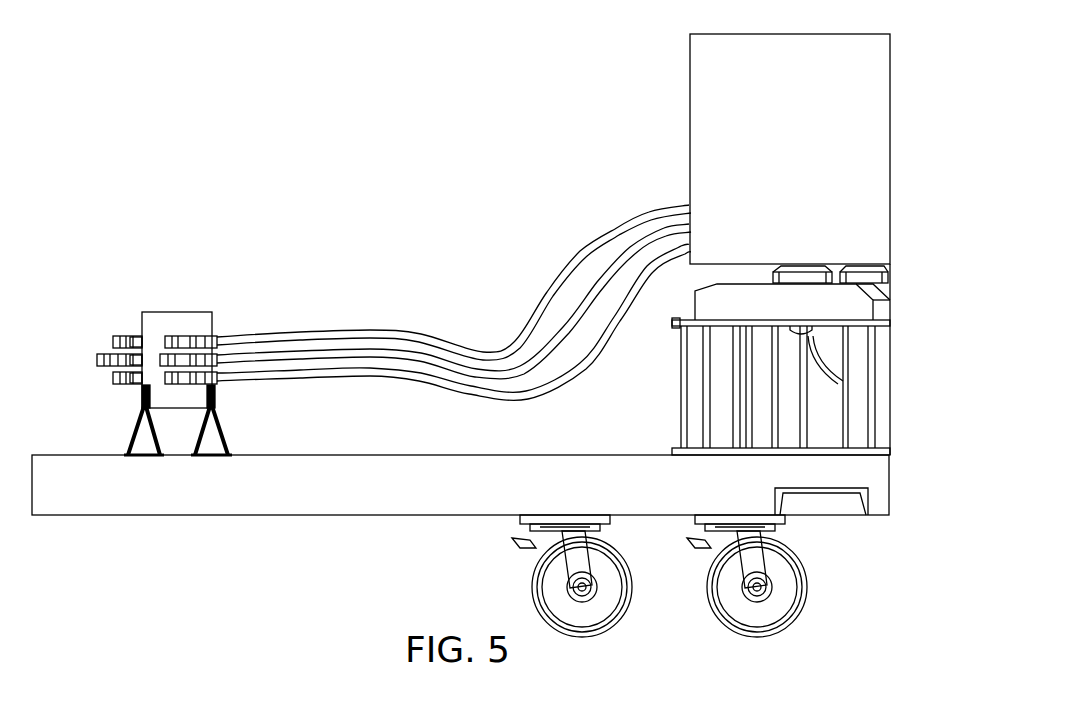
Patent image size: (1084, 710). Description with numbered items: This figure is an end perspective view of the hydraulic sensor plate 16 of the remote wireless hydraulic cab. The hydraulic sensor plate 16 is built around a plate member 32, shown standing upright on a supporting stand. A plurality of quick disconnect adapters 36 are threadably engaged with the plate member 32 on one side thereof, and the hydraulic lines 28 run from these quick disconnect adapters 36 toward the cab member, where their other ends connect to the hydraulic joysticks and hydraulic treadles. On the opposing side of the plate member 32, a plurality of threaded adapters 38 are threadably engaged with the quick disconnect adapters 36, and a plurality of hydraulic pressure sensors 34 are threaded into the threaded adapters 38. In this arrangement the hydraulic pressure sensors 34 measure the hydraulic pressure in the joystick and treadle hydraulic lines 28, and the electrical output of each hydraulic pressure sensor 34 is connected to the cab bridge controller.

The hydraulic sensor plate 16 is at (176, 417).
The hydraulic lines 28 is at (450, 345).
The plate member 32 is at (142, 396).
The hydraulic pressure sensors 34 is at (104, 354).
The quick disconnect adapters 36 is at (184, 340).
The threaded adapters 38 is at (134, 350).